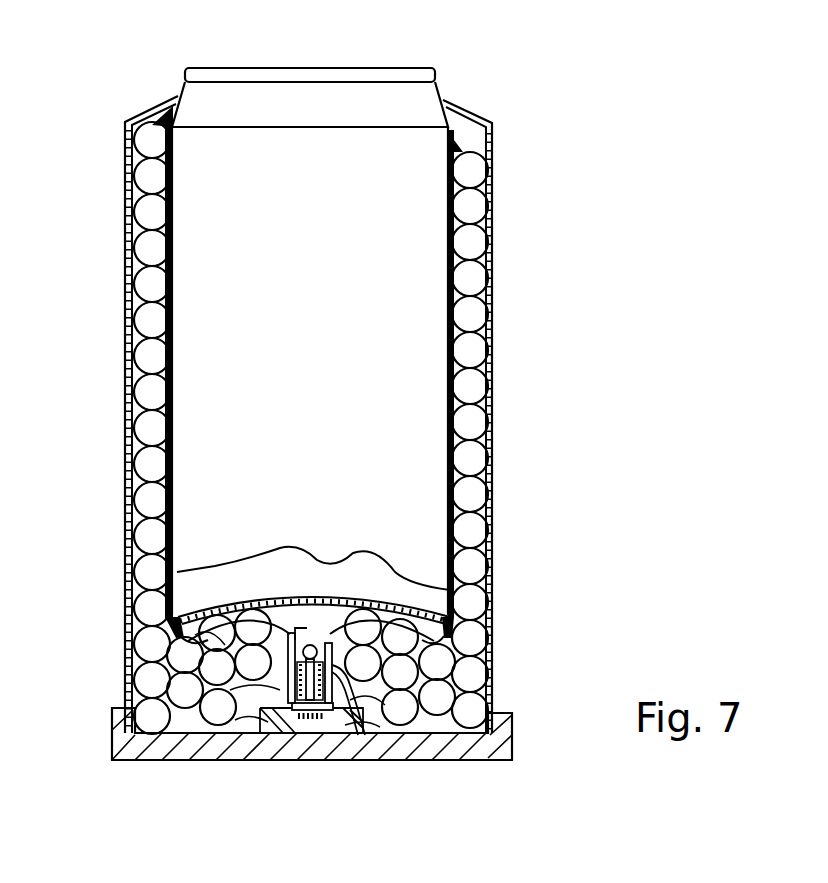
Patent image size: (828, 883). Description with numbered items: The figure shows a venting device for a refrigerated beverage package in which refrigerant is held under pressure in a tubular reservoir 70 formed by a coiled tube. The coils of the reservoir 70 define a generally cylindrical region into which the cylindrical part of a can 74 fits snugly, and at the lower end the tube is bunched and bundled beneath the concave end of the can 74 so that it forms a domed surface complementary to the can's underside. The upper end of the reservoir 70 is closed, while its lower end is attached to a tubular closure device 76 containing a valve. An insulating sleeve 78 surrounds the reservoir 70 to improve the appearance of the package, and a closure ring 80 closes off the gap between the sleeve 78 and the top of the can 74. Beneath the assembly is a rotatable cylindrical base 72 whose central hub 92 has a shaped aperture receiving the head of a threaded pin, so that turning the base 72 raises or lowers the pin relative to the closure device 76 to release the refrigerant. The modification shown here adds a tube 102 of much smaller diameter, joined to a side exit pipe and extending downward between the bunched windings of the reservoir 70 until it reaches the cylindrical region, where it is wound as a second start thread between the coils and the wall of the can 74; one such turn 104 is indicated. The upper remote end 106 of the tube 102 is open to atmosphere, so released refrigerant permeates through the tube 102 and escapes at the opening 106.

The tubular reservoir 70 is at (117, 176).
The cylindrical base 72 is at (434, 770).
The can 74 is at (195, 299).
The tubular closure device 76 is at (278, 714).
The insulating sleeve 78 is at (112, 217).
The closure ring 80 is at (468, 112).
The central hub 92 is at (256, 728).
The small diameter tube 102 is at (334, 712).
The turn of the tube 104 is at (487, 400).
The upper remote end 106 is at (162, 118).